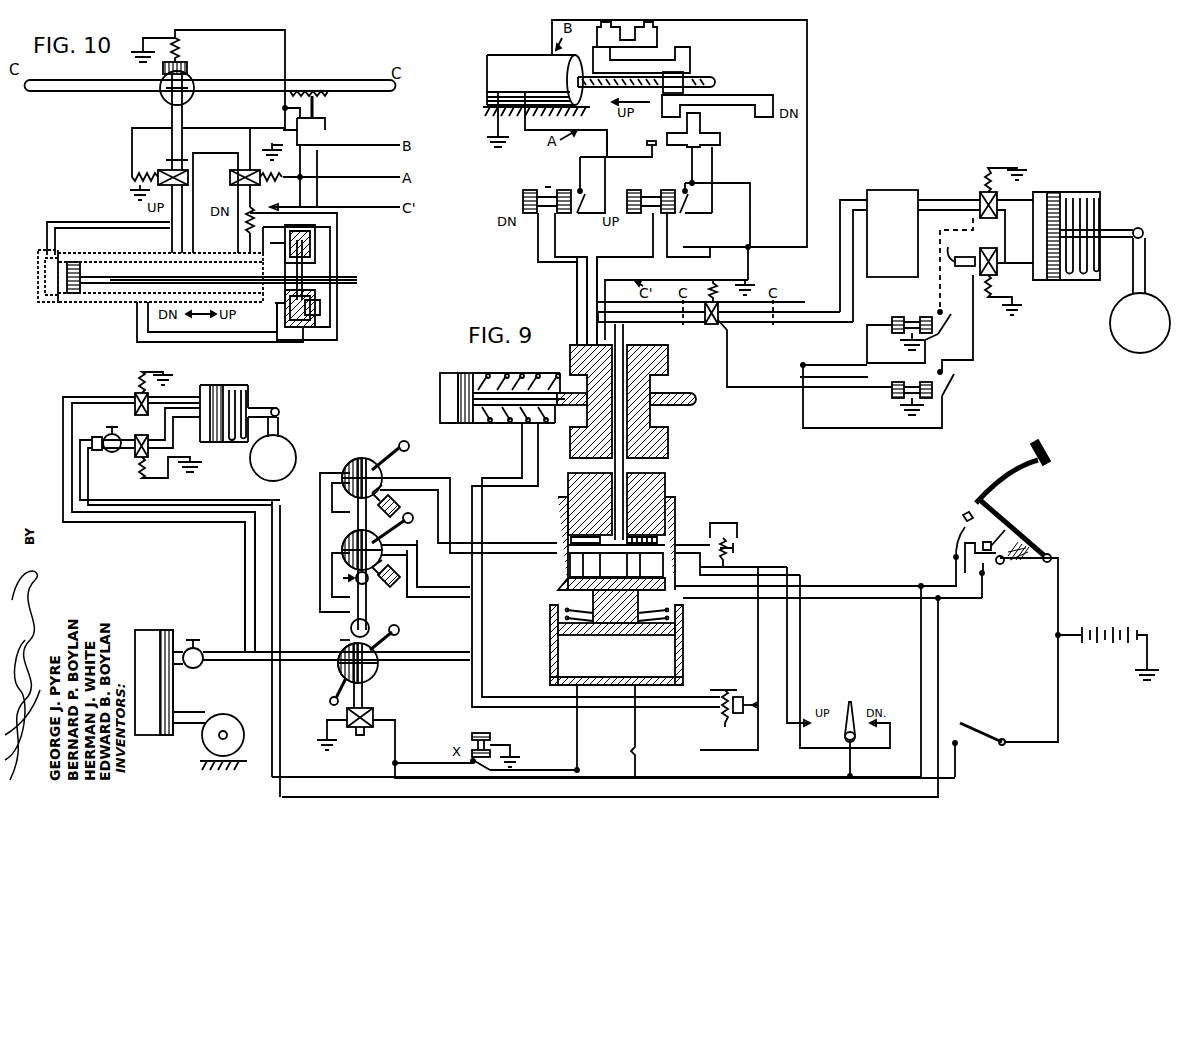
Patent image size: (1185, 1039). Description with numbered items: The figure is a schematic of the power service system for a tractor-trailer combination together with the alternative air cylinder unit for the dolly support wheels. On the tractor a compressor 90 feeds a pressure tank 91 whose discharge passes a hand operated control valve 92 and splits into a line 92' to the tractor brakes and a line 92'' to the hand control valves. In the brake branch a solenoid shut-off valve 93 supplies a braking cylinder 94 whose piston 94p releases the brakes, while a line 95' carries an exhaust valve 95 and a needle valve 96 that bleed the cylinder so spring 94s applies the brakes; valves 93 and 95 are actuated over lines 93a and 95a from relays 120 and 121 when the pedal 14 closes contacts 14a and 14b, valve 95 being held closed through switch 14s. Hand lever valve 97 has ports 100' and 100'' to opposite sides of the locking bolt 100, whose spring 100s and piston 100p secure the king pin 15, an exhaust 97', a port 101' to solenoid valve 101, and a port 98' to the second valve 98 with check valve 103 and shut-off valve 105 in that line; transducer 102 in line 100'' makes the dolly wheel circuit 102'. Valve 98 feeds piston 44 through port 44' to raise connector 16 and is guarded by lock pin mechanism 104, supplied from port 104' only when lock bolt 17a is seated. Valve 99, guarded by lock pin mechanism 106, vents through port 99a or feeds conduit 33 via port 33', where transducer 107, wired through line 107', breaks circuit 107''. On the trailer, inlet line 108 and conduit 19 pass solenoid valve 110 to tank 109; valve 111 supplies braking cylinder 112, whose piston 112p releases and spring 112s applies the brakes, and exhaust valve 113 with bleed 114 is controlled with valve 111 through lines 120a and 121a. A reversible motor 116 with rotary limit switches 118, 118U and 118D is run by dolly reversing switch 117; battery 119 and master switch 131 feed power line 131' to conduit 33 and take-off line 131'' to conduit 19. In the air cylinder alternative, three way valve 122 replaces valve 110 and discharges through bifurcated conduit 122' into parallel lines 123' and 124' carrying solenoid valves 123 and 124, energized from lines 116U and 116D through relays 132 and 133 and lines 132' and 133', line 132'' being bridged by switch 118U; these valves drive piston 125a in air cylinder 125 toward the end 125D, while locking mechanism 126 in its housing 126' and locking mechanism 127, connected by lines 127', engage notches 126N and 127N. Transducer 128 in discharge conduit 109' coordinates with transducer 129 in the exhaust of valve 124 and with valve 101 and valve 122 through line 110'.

In FIG. 10, the inlet line 108 is at (98, 91).
In FIG. 9, the inlet line 108 is at (627, 302).
In FIG. 10, the discharge conduit 109' is at (364, 72).
In FIG. 9, the discharge conduit 109' is at (843, 272).
In FIG. 10, the take off electrical power line 131'' is at (254, 79).
In FIG. 9, the take off electrical power line 131'' is at (703, 294).
In FIG. 10, the three way solenoid operated control valve 122 is at (180, 71).
In FIG. 10, the bifurcated conduit 122' is at (198, 134).
In FIG. 10, the parallel line 124' is at (225, 180).
In FIG. 10, the pressure transducer 128 is at (322, 98).
In FIG. 10, the line 116U is at (374, 146).
In FIG. 9, the line 116U is at (808, 70).
In FIG. 10, the line 116D is at (374, 178).
In FIG. 9, the line 116D is at (607, 143).
In FIG. 10, the solenoid operated control valve 123 is at (159, 164).
In FIG. 10, the parallel line 123' is at (239, 165).
In FIG. 10, the solenoid operated control valve 124 is at (205, 203).
In FIG. 10, the fluid passage 127' is at (184, 272).
In FIG. 10, the pressure transducer 129 is at (246, 222).
In FIG. 10, the cylinder head 125D is at (250, 247).
In FIG. 10, the piston housing 126' is at (337, 235).
In FIG. 10, the locking mechanism 126 is at (337, 262).
In FIG. 10, the notch 126N is at (330, 272).
In FIG. 10, the notch 127N is at (115, 283).
In FIG. 10, the piston 125a is at (46, 305).
In FIG. 10, the air cylinder 125 is at (92, 305).
In FIG. 10, the locking mechanism 127 is at (334, 316).
In FIG. 9, the D.-C. reversible motor 116 is at (490, 63).
In FIG. 9, the rotary limit switch 118D is at (640, 36).
In FIG. 9, the rotary limit switch 118 is at (713, 73).
In FIG. 9, the rotary limit switch 118U is at (720, 141).
In FIG. 9, the line 132'' is at (670, 156).
In FIG. 9, the circuit 107'' is at (720, 349).
In FIG. 9, the relay 132 is at (547, 189).
In FIG. 9, the relay 133 is at (651, 189).
In FIG. 9, the line 132' is at (714, 480).
In FIG. 9, the line 133' is at (722, 469).
In FIG. 9, the line 110' is at (693, 517).
In FIG. 9, the solenoid operated shut-off valve 110 is at (754, 344).
In FIG. 9, the conduit 19 is at (633, 325).
In FIG. 9, the pressure tank 109 is at (923, 217).
In FIG. 9, the solenoid shut-off valve 111 is at (982, 193).
In FIG. 9, the solenoid operated shut-off valve 113 is at (997, 270).
In FIG. 9, the bleed 114 is at (963, 251).
In FIG. 9, the braking cylinder 112 is at (1085, 196).
In FIG. 9, the brake piston 112p is at (1054, 192).
In FIG. 9, the spring 112s is at (1081, 280).
In FIG. 9, the relay 120 is at (907, 317).
In FIG. 9, the relay 121 is at (892, 396).
In FIG. 9, the line 121a is at (830, 387).
In FIG. 9, the line 120a is at (780, 378).
In FIG. 9, the locking bolt piston 100p is at (435, 388).
In FIG. 9, the piston operated locking bolt 100 is at (502, 388).
In FIG. 9, the spring 100s is at (527, 381).
In FIG. 9, the port 104' is at (593, 565).
In FIG. 9, the king pin 15 is at (668, 369).
In FIG. 9, the lock bolt 17a is at (688, 407).
In FIG. 9, the connector 16 is at (677, 506).
In FIG. 9, the main electrical power line 131' is at (564, 646).
In FIG. 9, the metal conduit 33 is at (592, 554).
In FIG. 9, the piston 44 is at (631, 637).
In FIG. 9, the pressure transducer 107 is at (737, 554).
In FIG. 9, the relay line 107' is at (729, 658).
In FIG. 9, the pressure transducer 102 is at (733, 693).
In FIG. 9, the dolly reversing switch 117 is at (851, 702).
In FIG. 9, the braking lever or pedal 14 is at (993, 504).
In FIG. 9, the brake switch contact 14a is at (961, 521).
In FIG. 9, the brake switch contact 14b is at (1011, 531).
In FIG. 9, the switch 14s is at (992, 570).
In FIG. 9, the battery 119 is at (1108, 626).
In FIG. 9, the master switch 131 is at (1009, 690).
In FIG. 9, the solenoid operated shut-off valve 93 is at (137, 392).
In FIG. 9, the hand operated needle valve 96 is at (106, 432).
In FIG. 9, the exhaust valve 95 is at (154, 459).
In FIG. 9, the line 95' is at (174, 428).
In FIG. 9, the braking cylinder 94 is at (228, 388).
In FIG. 9, the piston 94p is at (215, 386).
In FIG. 9, the spring 94s is at (250, 392).
In FIG. 9, the line 93a is at (149, 517).
In FIG. 9, the line 95a is at (205, 498).
In FIG. 9, the line 92' is at (229, 582).
In FIG. 9, the pressure tank 91 is at (155, 635).
In FIG. 9, the hand operated control valve 92 is at (198, 642).
In FIG. 9, the line 92'' is at (208, 693).
In FIG. 9, the discharge port 100' is at (336, 673).
In FIG. 9, the compressor 90 is at (236, 723).
In FIG. 9, the third multi-channel hand control valve 99 is at (368, 470).
In FIG. 9, the discharge port 33' is at (390, 449).
In FIG. 9, the lock pin mechanism 106 is at (396, 495).
In FIG. 9, the second multi-channel hand control valve 98 is at (391, 528).
In FIG. 9, the discharge port 99a is at (360, 506).
In FIG. 9, the lock pin mechanism 104 is at (414, 574).
In FIG. 9, the check valve 103 is at (362, 586).
In FIG. 9, the discharge port 44' is at (434, 582).
In FIG. 9, the discharge port 98' is at (341, 626).
In FIG. 9, the hand operated shut-off valve 105 is at (340, 640).
In FIG. 9, the hand lever operated valve 97 is at (379, 644).
In FIG. 9, the discharge port 97' is at (326, 700).
In FIG. 9, the discharge port 100'' is at (381, 647).
In FIG. 9, the discharge port 101' is at (388, 691).
In FIG. 9, the solenoid shut-off valve 101 is at (636, 737).
In FIG. 9, the dolly wheel control circuit 102' is at (525, 745).